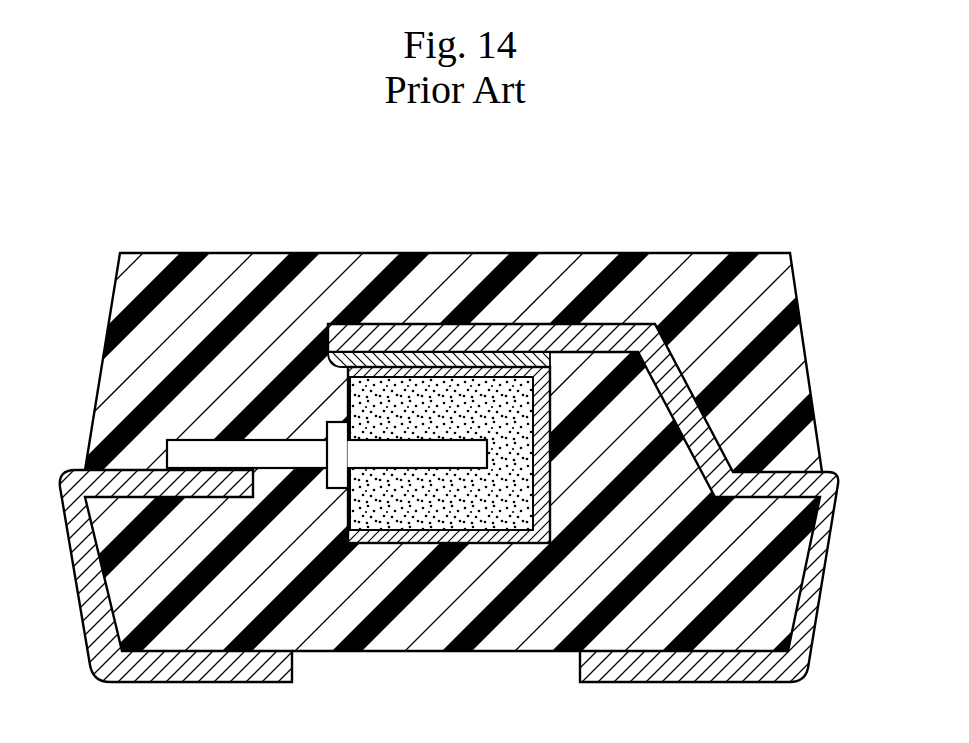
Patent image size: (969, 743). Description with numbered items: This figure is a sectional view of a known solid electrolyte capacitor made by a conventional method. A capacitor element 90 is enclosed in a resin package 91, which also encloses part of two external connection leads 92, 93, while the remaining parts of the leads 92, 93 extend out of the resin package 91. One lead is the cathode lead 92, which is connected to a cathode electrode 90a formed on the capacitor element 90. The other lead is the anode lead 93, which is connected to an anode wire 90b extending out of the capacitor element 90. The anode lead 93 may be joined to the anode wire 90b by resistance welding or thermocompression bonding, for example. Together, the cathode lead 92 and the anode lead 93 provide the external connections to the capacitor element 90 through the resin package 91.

The capacitor element 90 is at (491, 552).
The cathode electrode 90a is at (551, 480).
The anode wire 90b is at (218, 440).
The resin package 91 is at (788, 301).
The cathode lead 92 is at (852, 469).
The anode lead 93 is at (66, 463).